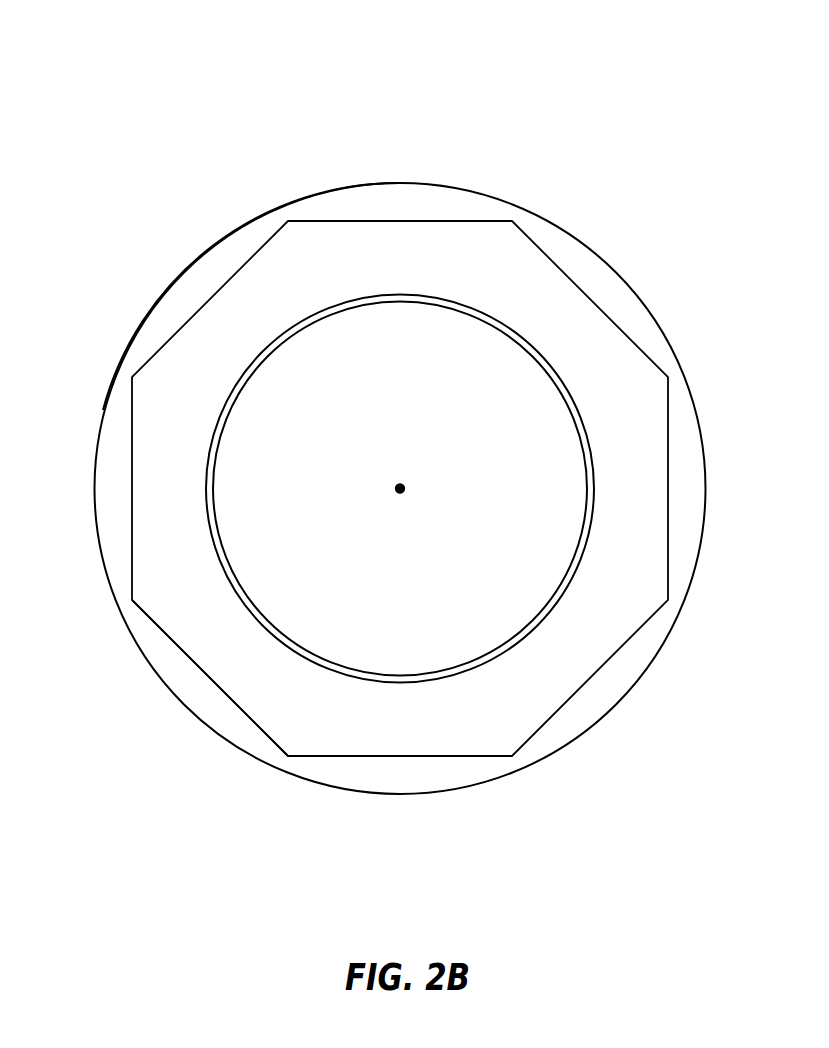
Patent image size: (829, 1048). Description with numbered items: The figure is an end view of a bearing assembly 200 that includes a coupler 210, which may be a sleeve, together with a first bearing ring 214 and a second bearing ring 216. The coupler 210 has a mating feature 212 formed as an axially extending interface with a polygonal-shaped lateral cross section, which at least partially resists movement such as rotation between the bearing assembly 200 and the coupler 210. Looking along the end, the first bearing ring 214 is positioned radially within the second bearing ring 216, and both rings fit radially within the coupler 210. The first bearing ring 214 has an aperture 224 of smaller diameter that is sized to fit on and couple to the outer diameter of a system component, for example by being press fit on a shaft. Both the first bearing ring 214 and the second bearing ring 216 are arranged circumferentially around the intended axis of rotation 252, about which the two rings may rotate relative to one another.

The bearing assembly 200 is at (628, 121).
The coupler 210 is at (202, 283).
The mating feature 212 is at (442, 216).
The first bearing ring 214 is at (339, 319).
The second bearing ring 216 is at (220, 635).
The aperture 224 is at (212, 485).
The intended axis of rotation 252 is at (405, 488).